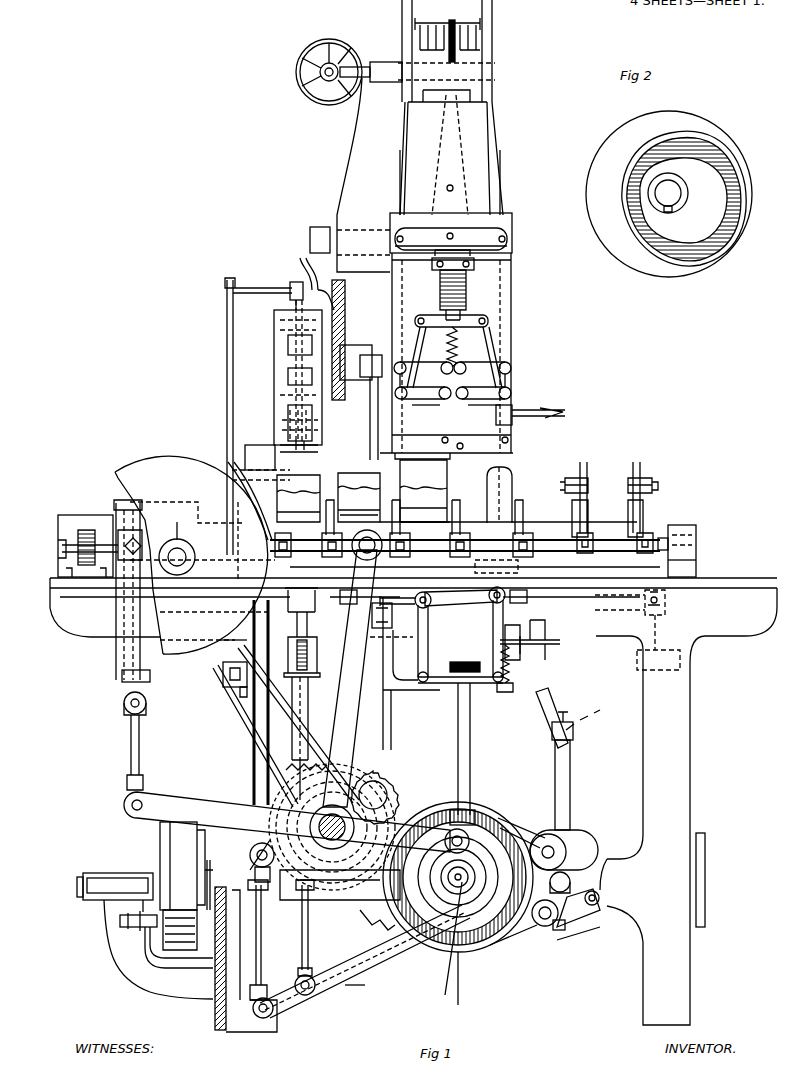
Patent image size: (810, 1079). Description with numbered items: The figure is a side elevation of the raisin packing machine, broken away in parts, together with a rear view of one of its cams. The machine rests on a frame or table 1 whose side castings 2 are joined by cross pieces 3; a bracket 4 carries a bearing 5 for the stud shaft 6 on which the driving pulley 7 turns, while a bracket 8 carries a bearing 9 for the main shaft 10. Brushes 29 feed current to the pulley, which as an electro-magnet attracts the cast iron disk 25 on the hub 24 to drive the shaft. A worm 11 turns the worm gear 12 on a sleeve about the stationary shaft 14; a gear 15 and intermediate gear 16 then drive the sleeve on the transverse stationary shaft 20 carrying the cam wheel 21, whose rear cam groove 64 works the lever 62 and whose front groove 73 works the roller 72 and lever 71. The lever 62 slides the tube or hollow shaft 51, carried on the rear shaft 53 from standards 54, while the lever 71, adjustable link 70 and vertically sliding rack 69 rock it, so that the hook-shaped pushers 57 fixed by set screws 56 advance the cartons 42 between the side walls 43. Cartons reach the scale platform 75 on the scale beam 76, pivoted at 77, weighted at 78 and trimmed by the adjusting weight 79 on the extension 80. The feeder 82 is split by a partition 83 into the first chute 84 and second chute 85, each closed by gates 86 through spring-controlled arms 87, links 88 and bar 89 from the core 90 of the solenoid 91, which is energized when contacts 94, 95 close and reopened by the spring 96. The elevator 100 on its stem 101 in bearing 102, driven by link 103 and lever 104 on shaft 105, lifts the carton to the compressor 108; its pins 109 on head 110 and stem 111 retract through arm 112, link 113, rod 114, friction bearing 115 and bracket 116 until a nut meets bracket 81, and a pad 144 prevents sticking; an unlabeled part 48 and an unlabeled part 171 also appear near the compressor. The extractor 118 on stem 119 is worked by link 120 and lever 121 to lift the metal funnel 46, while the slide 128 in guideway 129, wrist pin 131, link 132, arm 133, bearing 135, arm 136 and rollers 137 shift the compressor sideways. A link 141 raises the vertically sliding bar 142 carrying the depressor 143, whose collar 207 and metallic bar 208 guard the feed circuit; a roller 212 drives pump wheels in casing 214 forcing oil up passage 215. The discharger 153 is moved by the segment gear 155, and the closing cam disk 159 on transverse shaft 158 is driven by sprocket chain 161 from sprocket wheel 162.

In FIG. 1, the frame or table 1 is at (752, 576).
In FIG. 1, the side castings 2 is at (418, 806).
In FIG. 1, the cross pieces 3 is at (705, 895).
In FIG. 1, the bracket 4 is at (158, 949).
In FIG. 1, the bearing 5 is at (118, 886).
In FIG. 1, the stud shaft 6 is at (77, 886).
In FIG. 1, the driving pulley 7 is at (178, 886).
In FIG. 1, the bracket 8 is at (253, 942).
In FIG. 1, the bearing 9 is at (300, 900).
In FIG. 1, the main shaft 10 is at (253, 898).
In FIG. 1, the worm 11 is at (330, 922).
In FIG. 1, the worm gear 12 is at (392, 788).
In FIG. 1, the stationary shaft 14 is at (355, 822).
In FIG. 1, the gear 15 is at (360, 785).
In FIG. 1, the intermediate gear 16 is at (372, 930).
In FIG. 1, the transverse stationary shaft 20 is at (437, 941).
In FIG. 1, the cam wheel 21 is at (472, 867).
In FIG. 2, the cam wheel 21 is at (669, 194).
In FIG. 1, the hub 24 is at (208, 870).
In FIG. 1, the cast iron disk 25 is at (205, 850).
In FIG. 1, the brushes 29 is at (120, 922).
In FIG. 1, the cartons 42 is at (359, 511).
In FIG. 1, the side walls 43 is at (465, 553).
In FIG. 1, the metal funnel 46 is at (328, 497).
In FIG. 1, the head block 48 is at (435, 458).
In FIG. 1, the tube or hollow shaft 51 is at (442, 533).
In FIG. 1, the rear shaft 53 is at (663, 538).
In FIG. 1, the standards 54 is at (696, 556).
In FIG. 1, the set screws 56 is at (555, 526).
In FIG. 1, the hook-shaped pushers 57 is at (575, 516).
In FIG. 1, the lever 62 is at (352, 668).
In FIG. 2, the cam groove 64 is at (714, 248).
In FIG. 1, the vertically sliding rack 69 is at (128, 505).
In FIG. 1, the adjustable link 70 is at (141, 750).
In FIG. 1, the lever 71 is at (296, 822).
In FIG. 1, the roller 72 is at (505, 815).
In FIG. 1, the groove 73 is at (492, 948).
In FIG. 1, the scale platform 75 is at (425, 543).
In FIG. 1, the scale beam 76 is at (516, 596).
In FIG. 1, the pivot 77 is at (480, 598).
In FIG. 1, the weight 78 is at (670, 635).
In FIG. 1, the adjusting weight 79 is at (546, 640).
In FIG. 1, the extension 80 is at (560, 646).
In FIG. 1, the bracket 81 is at (290, 355).
In FIG. 1, the feeder 82 is at (446, 51).
In FIG. 1, the partition 83 is at (444, 178).
In FIG. 1, the first chute 84 is at (484, 182).
In FIG. 1, the second chute 85 is at (411, 182).
In FIG. 1, the gates 86 is at (426, 412).
In FIG. 1, the spring-controlled arms 87 is at (484, 411).
In FIG. 1, the links 88 is at (492, 352).
In FIG. 1, the bar 89 is at (488, 321).
In FIG. 1, the core 90 is at (462, 314).
In FIG. 1, the solenoid 91 is at (440, 276).
In FIG. 1, the contact 94 is at (392, 620).
In FIG. 1, the contact 95 is at (395, 621).
In FIG. 1, the spring 96 is at (458, 340).
In FIG. 1, the elevator 100 is at (321, 600).
In FIG. 1, the stem 101 is at (308, 630).
In FIG. 1, the bearing 102 is at (291, 738).
In FIG. 1, the link 103 is at (305, 937).
In FIG. 1, the lever 104 is at (349, 978).
In FIG. 1, the shaft 105 is at (548, 926).
In FIG. 1, the compressor 108 is at (288, 349).
In FIG. 1, the pins 109 is at (312, 450).
In FIG. 1, the head 110 is at (286, 428).
In FIG. 1, the stem 111 is at (290, 300).
In FIG. 1, the arm 112 is at (278, 276).
In FIG. 1, the link 113 is at (227, 364).
In FIG. 1, the rod 114 is at (229, 671).
In FIG. 1, the friction bearing 115 is at (236, 680).
In FIG. 1, the bracket 116 is at (236, 694).
In FIG. 1, the extractor 118 is at (268, 462).
In FIG. 1, the stem 119 is at (252, 768).
In FIG. 1, the link 120 is at (247, 945).
In FIG. 1, the lever 121 is at (582, 912).
In FIG. 1, the slide 128 is at (345, 295).
In FIG. 1, the guideway 129 is at (340, 306).
In FIG. 1, the wrist pin 131 is at (352, 345).
In FIG. 1, the link 132 is at (366, 355).
In FIG. 1, the arm 133 is at (374, 356).
In FIG. 1, the bearing 135 is at (443, 673).
In FIG. 1, the arm 136 is at (470, 749).
In FIG. 1, the rollers 137 is at (470, 812).
In FIG. 1, the link 141 is at (550, 700).
In FIG. 1, the vertically sliding bar 142 is at (510, 496).
In FIG. 1, the depressor 143 is at (550, 414).
In FIG. 1, the pad 144 is at (310, 446).
In FIG. 1, the discharger 153 is at (77, 540).
In FIG. 1, the segment gear 155 is at (62, 548).
In FIG. 1, the horizontal transverse shaft 158 is at (171, 543).
In FIG. 1, the cam disk 159 is at (195, 555).
In FIG. 1, the sprocket chain 161 is at (255, 712).
In FIG. 1, the sprocket wheel 162 is at (375, 780).
In FIG. 1, the block 171 is at (288, 375).
In FIG. 1, the collar 207 is at (595, 717).
In FIG. 1, the metallic bar 208 is at (522, 648).
In FIG. 1, the roller 212 is at (548, 836).
In FIG. 1, the casing 214 is at (580, 836).
In FIG. 1, the passage 215 is at (570, 778).